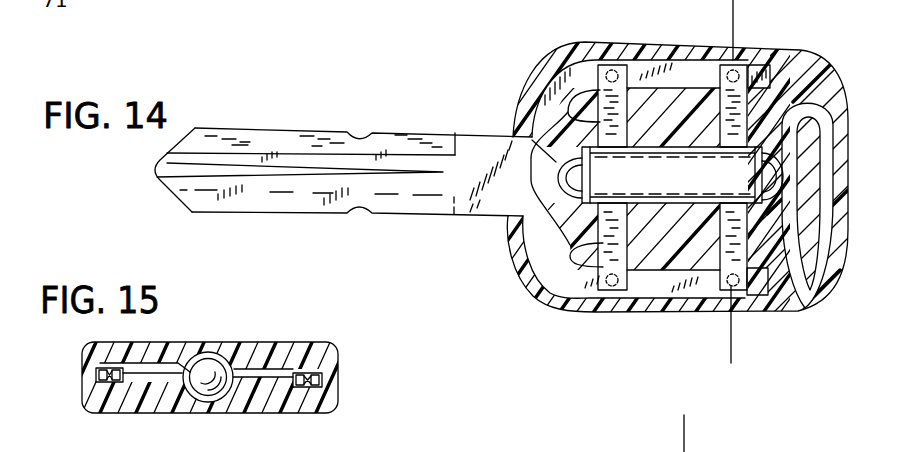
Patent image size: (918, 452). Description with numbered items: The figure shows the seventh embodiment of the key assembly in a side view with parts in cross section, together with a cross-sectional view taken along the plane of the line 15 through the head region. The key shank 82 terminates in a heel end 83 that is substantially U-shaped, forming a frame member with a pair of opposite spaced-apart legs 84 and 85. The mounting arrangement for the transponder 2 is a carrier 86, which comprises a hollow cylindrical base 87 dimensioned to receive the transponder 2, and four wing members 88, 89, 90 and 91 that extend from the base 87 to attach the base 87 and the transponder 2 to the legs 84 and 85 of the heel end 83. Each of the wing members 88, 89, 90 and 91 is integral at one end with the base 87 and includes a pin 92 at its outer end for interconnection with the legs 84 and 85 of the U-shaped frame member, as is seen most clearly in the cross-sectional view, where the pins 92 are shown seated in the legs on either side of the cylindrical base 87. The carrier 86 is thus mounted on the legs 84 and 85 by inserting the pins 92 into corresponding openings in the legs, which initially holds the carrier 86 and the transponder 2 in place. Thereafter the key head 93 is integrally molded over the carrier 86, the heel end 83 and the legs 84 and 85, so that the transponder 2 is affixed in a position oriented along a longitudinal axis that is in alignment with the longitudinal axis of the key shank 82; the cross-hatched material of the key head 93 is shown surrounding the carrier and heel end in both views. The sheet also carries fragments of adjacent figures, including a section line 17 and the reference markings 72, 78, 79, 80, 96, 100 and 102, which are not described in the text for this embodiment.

In FIG. 14, the transponder 2 is at (785, 177).
In FIG. 15, the transponder 2 is at (202, 399).
In FIG. 14, the line 15— 15 is at (775, 5).
In FIG. 14, the section line 17- 17 is at (727, 415).
In FIG. 14, the key head 72 is at (148, 0).
In FIG. 14, the recess 78 is at (235, 0).
In FIG. 14, the shoulder 79 is at (103, 0).
In FIG. 14, the slot 80 is at (340, 1).
In FIG. 14, the key shank 82 is at (308, 205).
In FIG. 14, the heel end 83 is at (513, 190).
In FIG. 14, the leg 84 is at (680, 65).
In FIG. 15, the leg 84 is at (320, 376).
In FIG. 14, the leg 85 is at (633, 297).
In FIG. 15, the leg 85 is at (97, 374).
In FIG. 14, the carrier 86 is at (823, 290).
In FIG. 14, the hollow cylindrical base 87 is at (593, 172).
In FIG. 15, the hollow cylindrical base 87 is at (232, 396).
In FIG. 14, the wing member 88 is at (603, 122).
In FIG. 14, the wing member 89 is at (740, 102).
In FIG. 14, the wing member 90 is at (788, 290).
In FIG. 14, the wing member 91 is at (582, 241).
In FIG. 14, the pin 92 is at (617, 70).
In FIG. 15, the pin 92 is at (112, 382).
In FIG. 14, the key head 93 is at (842, 137).
In FIG. 15, the key head 93 is at (263, 354).
In FIG. 14, the housing 96 is at (798, 451).
In FIG. 14, the lock 100 is at (576, 451).
In FIG. 14, the cover 102 is at (728, 450).